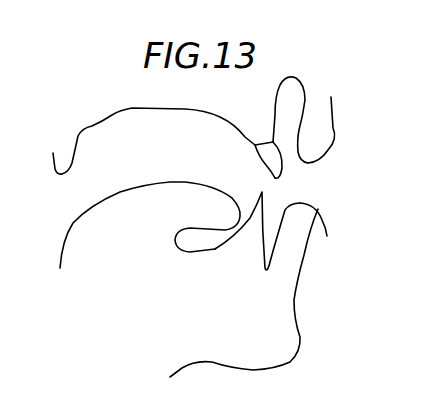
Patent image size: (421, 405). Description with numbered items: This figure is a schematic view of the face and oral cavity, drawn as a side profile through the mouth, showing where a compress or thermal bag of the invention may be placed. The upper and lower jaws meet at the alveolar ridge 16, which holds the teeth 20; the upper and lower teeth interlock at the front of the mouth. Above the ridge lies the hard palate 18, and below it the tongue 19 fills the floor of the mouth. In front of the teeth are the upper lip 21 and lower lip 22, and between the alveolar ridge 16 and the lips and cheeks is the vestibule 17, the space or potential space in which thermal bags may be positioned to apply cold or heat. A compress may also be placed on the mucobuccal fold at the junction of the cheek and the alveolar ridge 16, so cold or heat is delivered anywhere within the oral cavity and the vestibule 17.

The alveolar ridge 16 is at (262, 140).
The vestibule 17 is at (291, 100).
The hard palate 18 is at (198, 110).
The tongue 19 is at (167, 195).
The teeth 20 is at (274, 156).
The upper lip 21 is at (322, 137).
The lower lip 22 is at (256, 290).